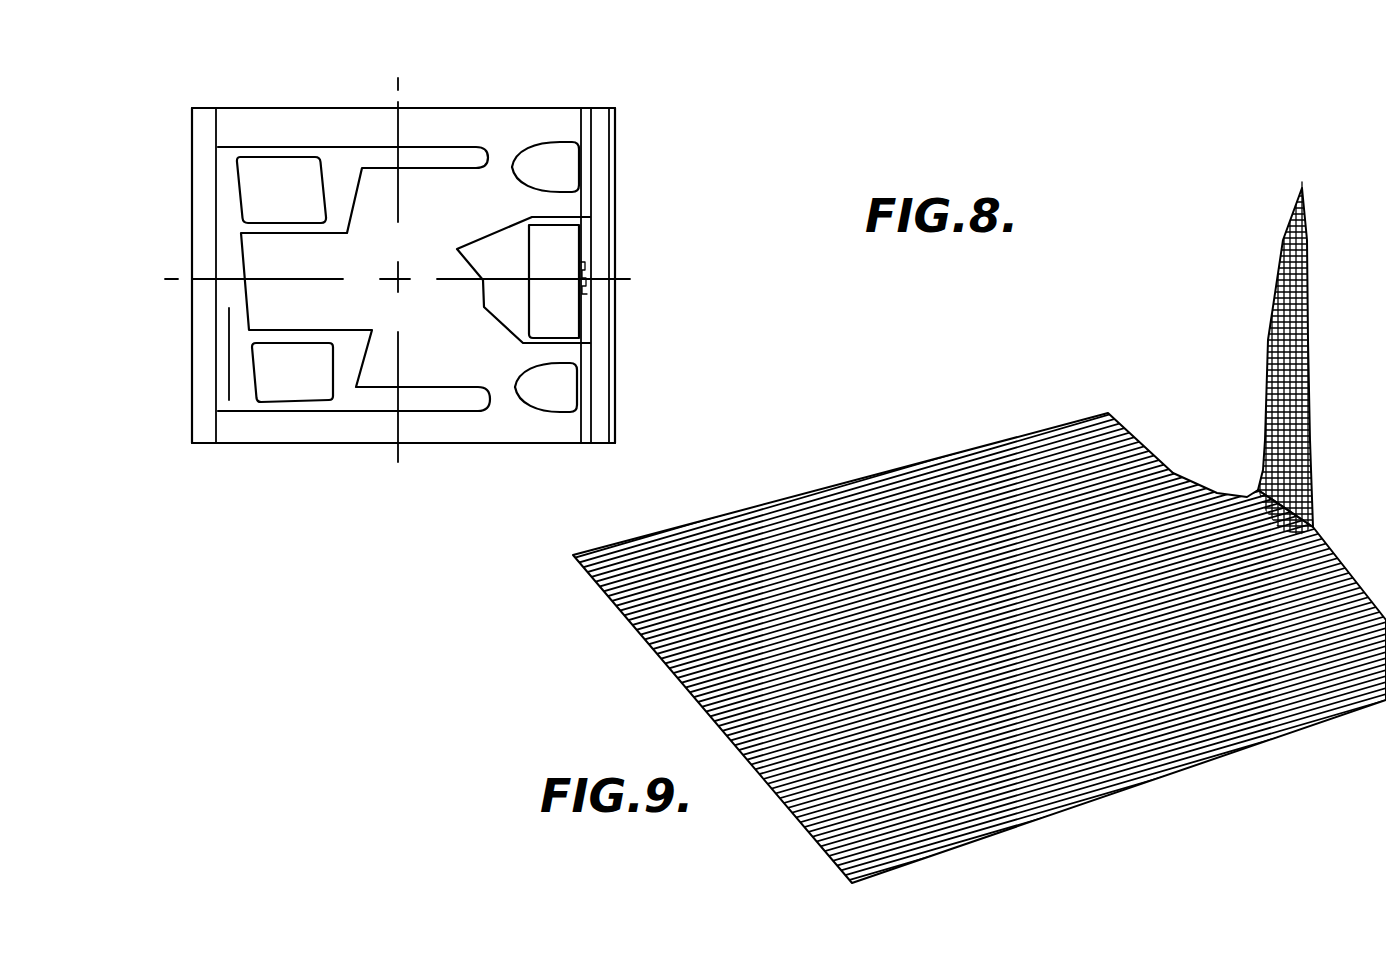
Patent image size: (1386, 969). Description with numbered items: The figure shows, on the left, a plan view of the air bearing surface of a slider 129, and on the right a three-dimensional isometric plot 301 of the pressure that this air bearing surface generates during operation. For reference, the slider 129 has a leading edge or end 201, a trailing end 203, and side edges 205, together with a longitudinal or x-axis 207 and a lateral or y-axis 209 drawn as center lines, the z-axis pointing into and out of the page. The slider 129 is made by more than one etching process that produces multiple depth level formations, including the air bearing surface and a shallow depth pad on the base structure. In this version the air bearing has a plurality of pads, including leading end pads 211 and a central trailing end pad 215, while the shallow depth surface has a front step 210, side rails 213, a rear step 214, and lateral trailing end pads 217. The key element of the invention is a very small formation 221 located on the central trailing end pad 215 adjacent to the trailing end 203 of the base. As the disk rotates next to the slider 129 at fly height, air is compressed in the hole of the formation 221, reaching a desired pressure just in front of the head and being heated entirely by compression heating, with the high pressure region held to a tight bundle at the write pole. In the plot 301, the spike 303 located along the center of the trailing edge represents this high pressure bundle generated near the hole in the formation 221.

In FIG. 8, the slider 129 is at (388, 508).
In FIG. 8, the leading edge or end 201 is at (190, 388).
In FIG. 8, the trailing end 203 is at (625, 396).
In FIG. 8, the side edges 205 is at (315, 106).
In FIG. 8, the longitudinal or x-axis 207 is at (652, 278).
In FIG. 8, the lateral or y-axis 209 is at (397, 473).
In FIG. 8, the front step 210 is at (229, 400).
In FIG. 8, the leading end pads 211 is at (273, 168).
In FIG. 8, the side rails 213 is at (468, 152).
In FIG. 8, the rear step 214 is at (510, 322).
In FIG. 8, the central trailing end pad 215 is at (572, 305).
In FIG. 8, the lateral trailing end pads 217 is at (563, 167).
In FIG. 8, the formation 221 is at (587, 272).
In FIG. 9, the three-dimensional isometric plot 301 is at (545, 638).
In FIG. 9, the spike 303 is at (1302, 212).